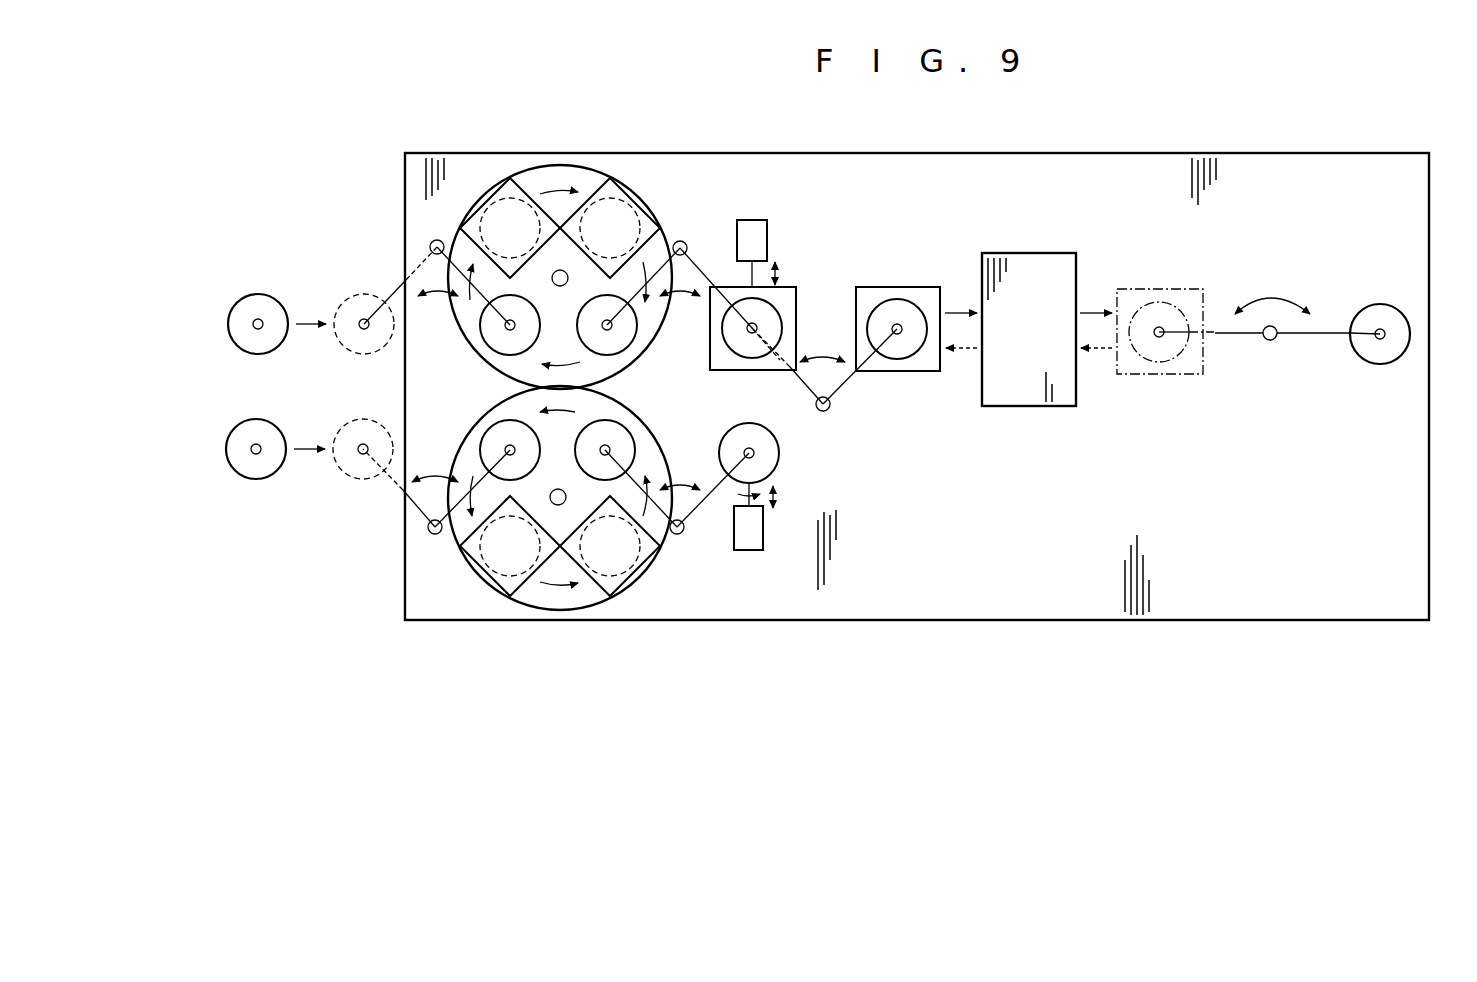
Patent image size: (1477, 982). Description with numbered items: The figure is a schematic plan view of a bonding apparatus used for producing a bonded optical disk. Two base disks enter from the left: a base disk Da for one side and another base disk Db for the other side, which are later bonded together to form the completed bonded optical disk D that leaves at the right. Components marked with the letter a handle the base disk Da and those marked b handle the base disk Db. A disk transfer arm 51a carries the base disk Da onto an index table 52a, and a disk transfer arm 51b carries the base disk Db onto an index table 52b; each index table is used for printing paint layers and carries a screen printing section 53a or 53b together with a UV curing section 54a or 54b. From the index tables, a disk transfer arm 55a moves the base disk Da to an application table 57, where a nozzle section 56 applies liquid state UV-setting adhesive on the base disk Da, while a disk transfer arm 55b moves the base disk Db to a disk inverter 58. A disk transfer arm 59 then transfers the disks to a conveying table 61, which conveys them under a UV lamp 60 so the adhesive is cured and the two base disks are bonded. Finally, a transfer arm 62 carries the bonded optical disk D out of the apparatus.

The disk transfer arm 51a is at (437, 247).
The disk transfer arm 51b is at (430, 530).
The index table 52a is at (575, 166).
The index table 52b is at (550, 610).
The screen printing section 53a is at (507, 190).
The screen printing section 53b is at (478, 568).
The UV curing section 54a is at (617, 190).
The UV curing section 54b is at (615, 600).
The disk transfer arm 55a is at (680, 241).
The disk transfer arm 55b is at (677, 534).
The nozzle section 56 is at (765, 232).
The application table 57 is at (797, 300).
The disk inverter 58 is at (750, 550).
The disk transfer arm 59 is at (826, 411).
The UV lamp 60 is at (1045, 406).
The conveying table 61 is at (925, 287).
The transfer arm 62 is at (1270, 341).
The bonded optical disk D is at (1410, 332).
The base disk Da is at (250, 295).
The base disk Db is at (248, 425).